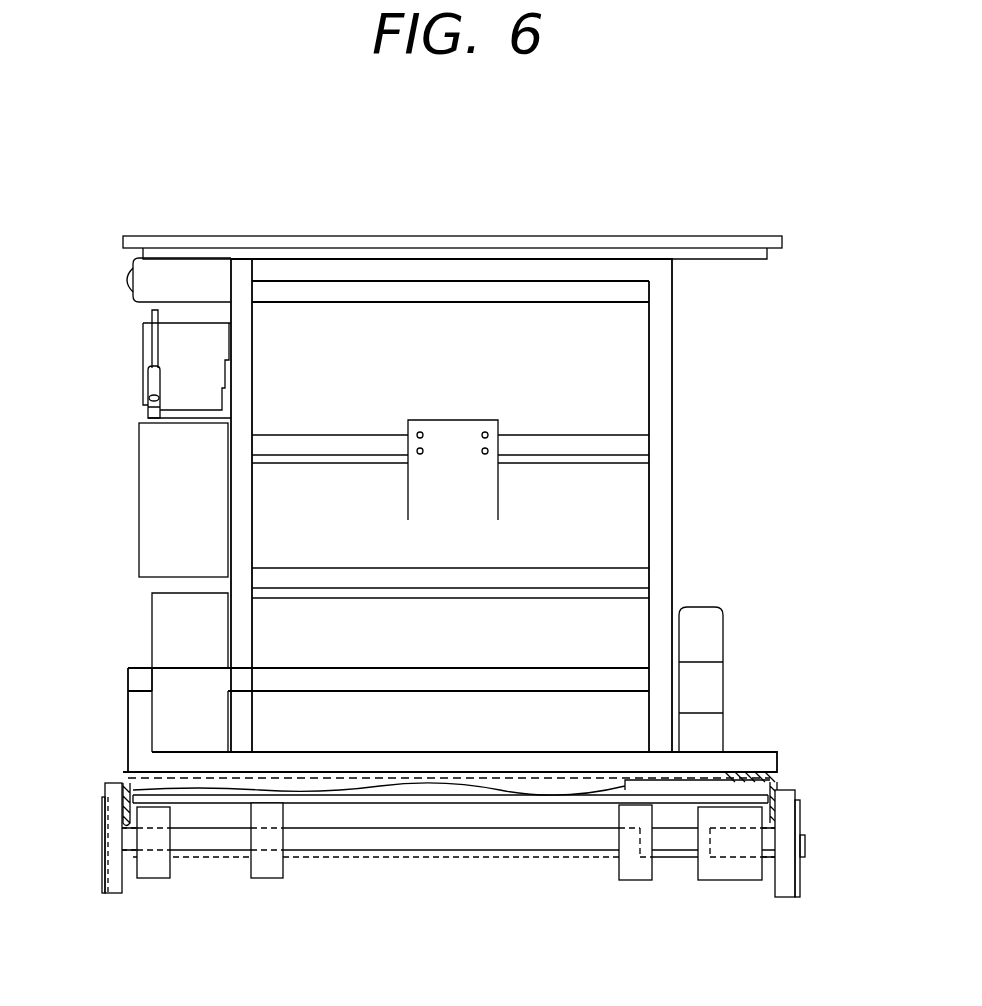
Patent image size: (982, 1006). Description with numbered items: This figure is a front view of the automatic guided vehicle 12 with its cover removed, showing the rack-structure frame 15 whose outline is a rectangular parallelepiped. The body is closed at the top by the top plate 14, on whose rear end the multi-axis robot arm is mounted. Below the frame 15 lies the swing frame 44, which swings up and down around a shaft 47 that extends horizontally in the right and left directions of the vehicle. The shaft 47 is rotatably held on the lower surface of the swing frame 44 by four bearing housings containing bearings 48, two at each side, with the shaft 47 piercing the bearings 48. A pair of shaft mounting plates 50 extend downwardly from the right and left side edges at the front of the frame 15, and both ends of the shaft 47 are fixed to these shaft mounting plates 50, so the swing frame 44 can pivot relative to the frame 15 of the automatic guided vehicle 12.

The automatic guided vehicle 12 is at (694, 224).
The top plate 14 is at (573, 236).
The frame 15 is at (124, 770).
The swing frame 44 is at (359, 804).
The shaft 47 is at (458, 849).
The bearings 48 is at (155, 878).
The shaft mounting plates 50 is at (104, 836).